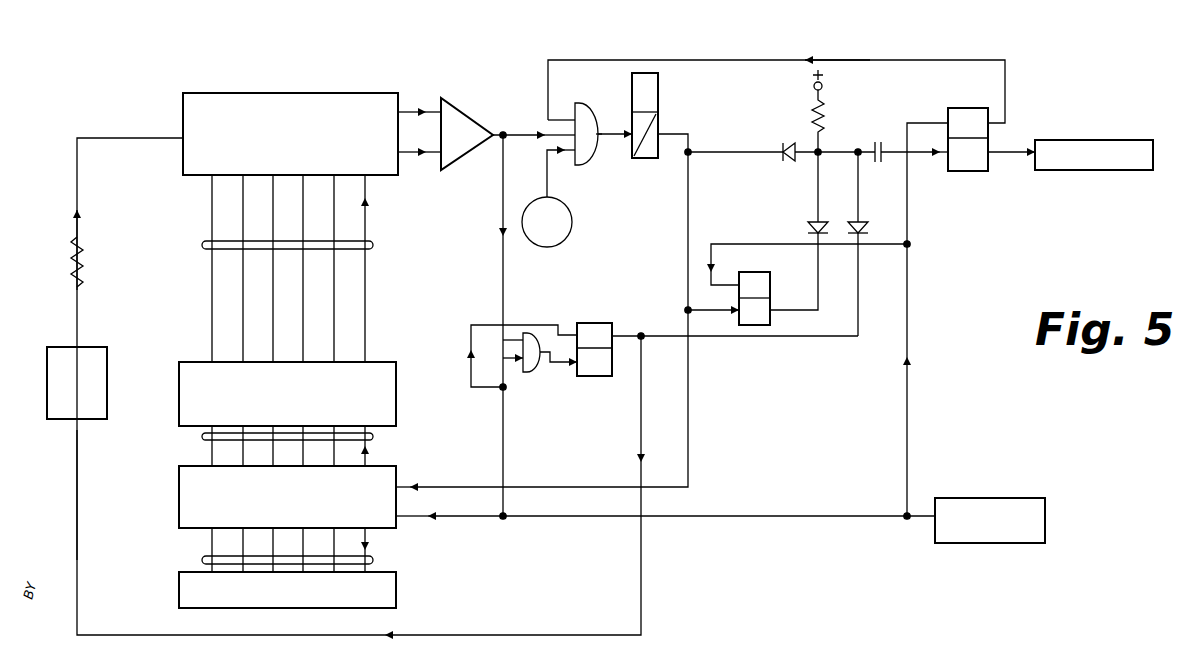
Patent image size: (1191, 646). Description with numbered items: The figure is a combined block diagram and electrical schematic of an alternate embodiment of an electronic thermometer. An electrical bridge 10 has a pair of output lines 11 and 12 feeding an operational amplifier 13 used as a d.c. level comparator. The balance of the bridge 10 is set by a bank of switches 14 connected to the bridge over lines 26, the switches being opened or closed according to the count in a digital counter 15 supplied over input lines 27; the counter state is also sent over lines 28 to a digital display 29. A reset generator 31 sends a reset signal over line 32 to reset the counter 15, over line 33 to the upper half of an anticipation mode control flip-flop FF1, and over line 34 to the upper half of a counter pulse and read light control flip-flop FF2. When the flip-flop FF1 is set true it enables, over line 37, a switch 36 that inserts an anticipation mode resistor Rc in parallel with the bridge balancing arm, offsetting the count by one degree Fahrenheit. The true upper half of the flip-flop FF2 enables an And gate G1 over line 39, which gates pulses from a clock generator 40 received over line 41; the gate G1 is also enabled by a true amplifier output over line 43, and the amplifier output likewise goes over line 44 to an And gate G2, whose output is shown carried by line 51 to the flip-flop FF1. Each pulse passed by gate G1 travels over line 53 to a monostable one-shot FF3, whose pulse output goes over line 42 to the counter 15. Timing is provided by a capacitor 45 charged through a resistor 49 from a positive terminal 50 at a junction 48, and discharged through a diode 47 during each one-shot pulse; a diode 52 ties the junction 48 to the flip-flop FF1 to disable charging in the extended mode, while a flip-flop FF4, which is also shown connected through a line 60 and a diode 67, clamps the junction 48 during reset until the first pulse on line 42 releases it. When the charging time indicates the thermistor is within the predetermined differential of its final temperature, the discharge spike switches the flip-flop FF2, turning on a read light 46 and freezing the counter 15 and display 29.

The electrical bridge 10 is at (300, 93).
The output line 11 is at (414, 111).
The output line 12 is at (416, 153).
The operational amplifier 13 is at (468, 114).
The bank of switches 14 is at (396, 388).
The digital counter 15 is at (398, 474).
The lines 26 is at (376, 247).
The input lines 27 is at (376, 437).
The lines 28 is at (376, 562).
The digital display 29 is at (396, 606).
The reset generator 31 is at (1043, 505).
The line 32 is at (460, 517).
The line 33 is at (525, 325).
The line 34 is at (907, 332).
The switch 36 is at (47, 362).
The line 37 is at (77, 498).
The line 39 is at (612, 59).
The clock generator 40 is at (560, 240).
The line 41 is at (547, 176).
The line 42 is at (688, 216).
The line 43 is at (520, 133).
The line 44 is at (503, 278).
The capacitor 45 is at (890, 128).
The read light 46 is at (1085, 140).
The diode 47 is at (790, 160).
The junction 48 is at (856, 156).
The resistor 49 is at (825, 116).
The terminal 50 is at (813, 86).
The gate G2 output line 51 is at (546, 362).
The diode 52 is at (866, 228).
The line 53 is at (600, 130).
The line to flip-flop FF4 60 is at (742, 244).
The diode 67 is at (808, 228).
The And gate G1 is at (592, 150).
The And gate G2 is at (523, 370).
The anticipation mode control flip-flop FF1 is at (596, 323).
The counter pulse and read light control flip-flop FF2 is at (990, 140).
The monostable flip-flop or one-shot FF3 is at (658, 106).
The flip-flop FF4 is at (750, 272).
The anticipation mode resistor Rc is at (70, 255).